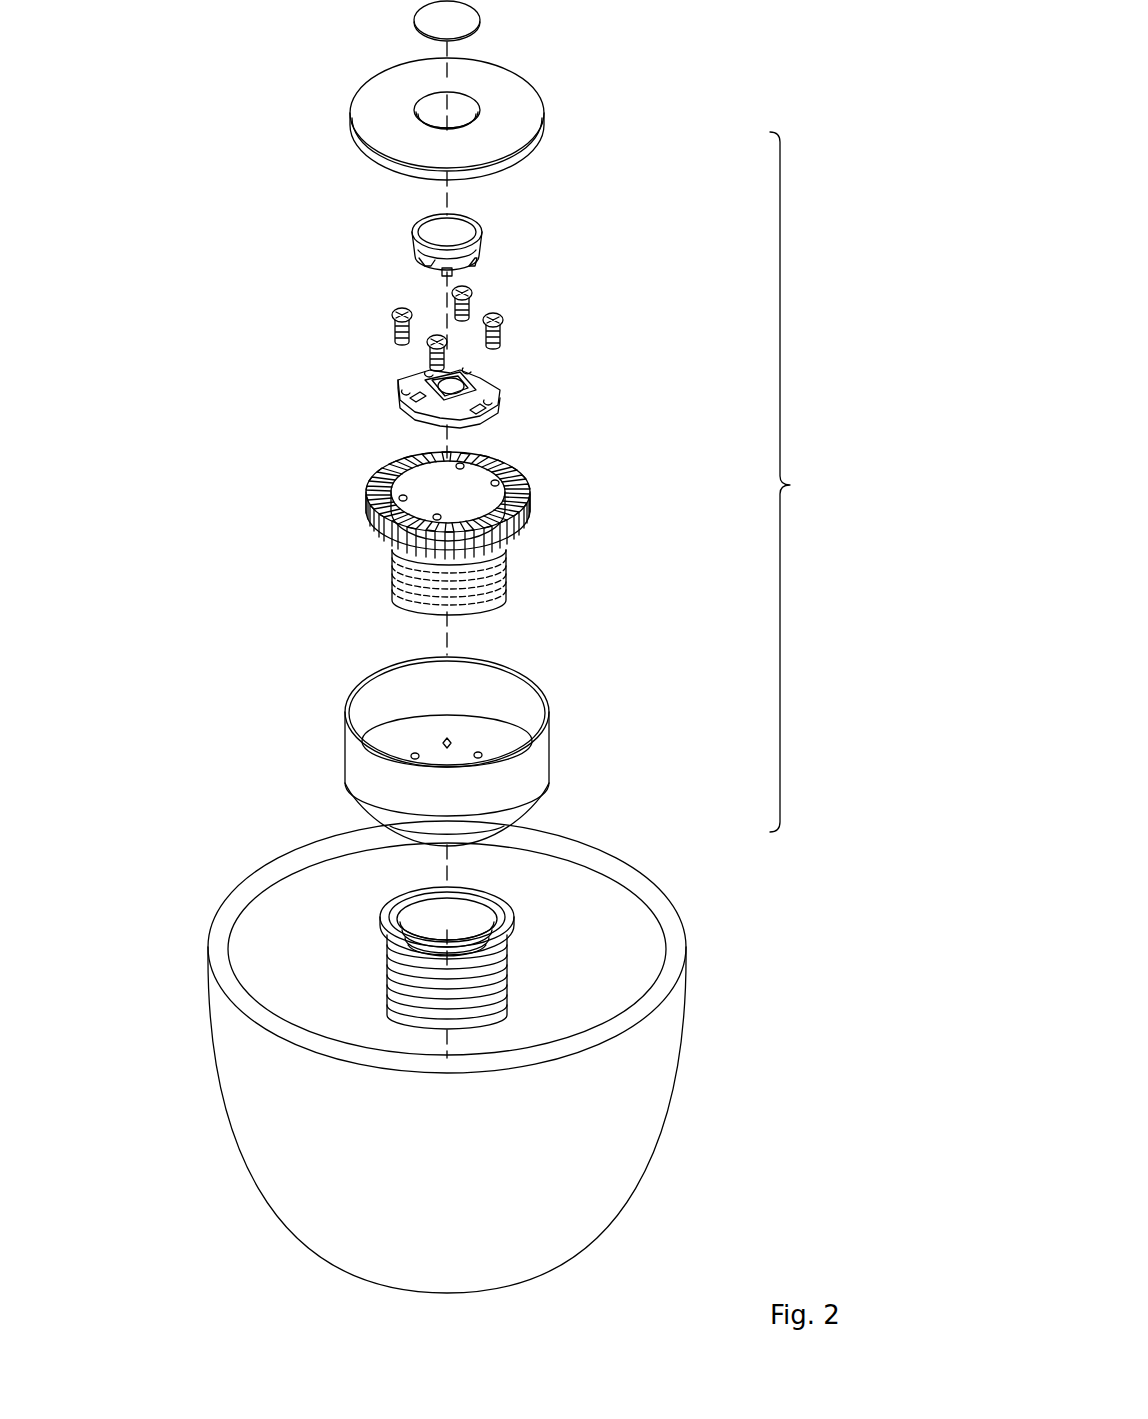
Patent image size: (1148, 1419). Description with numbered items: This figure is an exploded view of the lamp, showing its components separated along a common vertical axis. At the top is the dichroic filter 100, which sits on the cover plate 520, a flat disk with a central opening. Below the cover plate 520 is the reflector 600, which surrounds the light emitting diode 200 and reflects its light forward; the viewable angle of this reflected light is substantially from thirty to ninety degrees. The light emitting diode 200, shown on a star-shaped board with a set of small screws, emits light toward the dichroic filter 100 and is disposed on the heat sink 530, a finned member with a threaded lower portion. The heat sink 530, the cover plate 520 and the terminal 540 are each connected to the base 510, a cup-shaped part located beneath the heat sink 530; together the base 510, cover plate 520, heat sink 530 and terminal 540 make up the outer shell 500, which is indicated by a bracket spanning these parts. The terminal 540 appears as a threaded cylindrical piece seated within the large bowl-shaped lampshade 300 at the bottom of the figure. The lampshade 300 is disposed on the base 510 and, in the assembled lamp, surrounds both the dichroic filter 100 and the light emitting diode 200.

The dichroic filter 100 is at (466, 17).
The cover plate 520 is at (503, 92).
The reflector 600 is at (418, 262).
The light emitting diode 200 is at (400, 392).
The heat sink 530 is at (530, 520).
The base 510 is at (530, 760).
The terminal 540 is at (510, 906).
The lampshade 300 is at (645, 1058).
The outer shell 500 is at (815, 482).